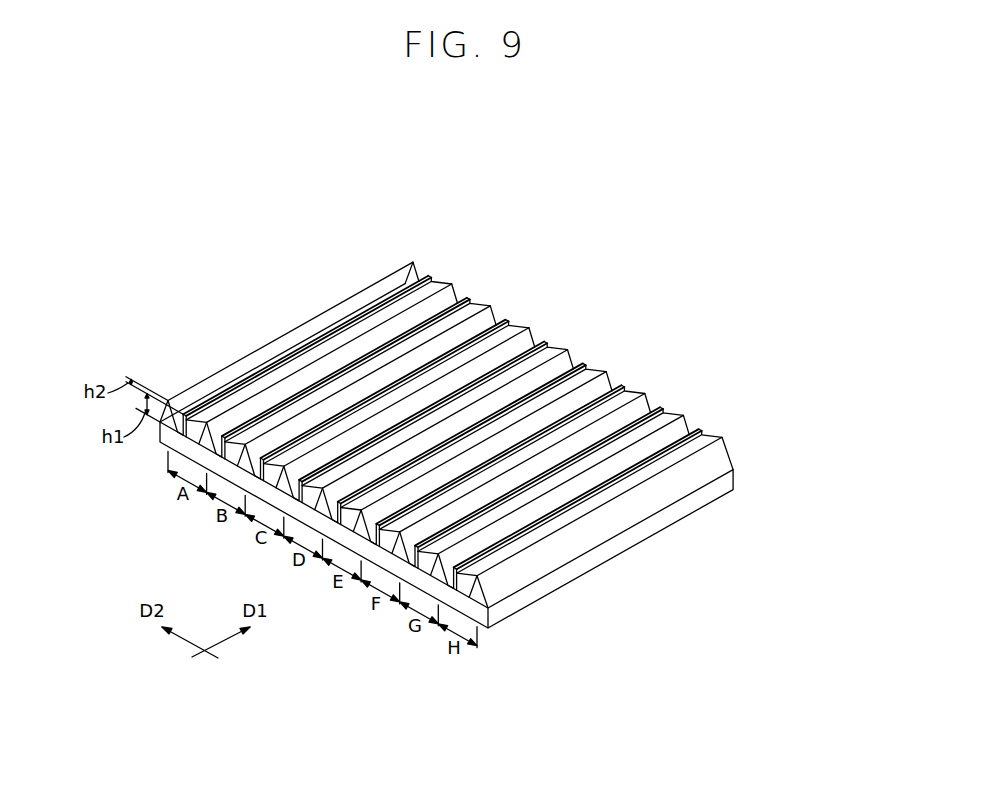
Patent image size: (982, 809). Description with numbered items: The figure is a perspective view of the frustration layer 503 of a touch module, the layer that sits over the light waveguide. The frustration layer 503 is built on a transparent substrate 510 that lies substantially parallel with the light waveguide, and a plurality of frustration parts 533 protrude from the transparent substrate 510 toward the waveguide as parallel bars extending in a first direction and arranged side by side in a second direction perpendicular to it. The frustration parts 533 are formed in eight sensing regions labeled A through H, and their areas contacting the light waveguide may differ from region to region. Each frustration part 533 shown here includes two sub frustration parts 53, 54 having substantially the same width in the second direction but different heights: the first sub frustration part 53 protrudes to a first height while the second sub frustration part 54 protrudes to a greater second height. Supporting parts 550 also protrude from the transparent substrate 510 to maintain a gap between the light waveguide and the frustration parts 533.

The frustration layer 503 is at (313, 268).
The frustration parts 533 is at (508, 252).
The first sub frustration part 53 is at (446, 411).
The second sub frustration part 54 is at (440, 272).
The supporting parts 550 is at (681, 418).
The transparent substrate 510 is at (736, 481).